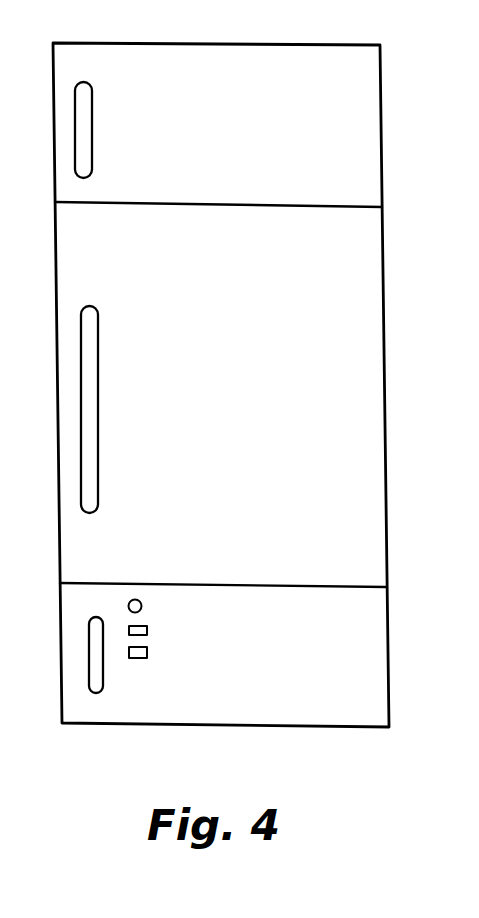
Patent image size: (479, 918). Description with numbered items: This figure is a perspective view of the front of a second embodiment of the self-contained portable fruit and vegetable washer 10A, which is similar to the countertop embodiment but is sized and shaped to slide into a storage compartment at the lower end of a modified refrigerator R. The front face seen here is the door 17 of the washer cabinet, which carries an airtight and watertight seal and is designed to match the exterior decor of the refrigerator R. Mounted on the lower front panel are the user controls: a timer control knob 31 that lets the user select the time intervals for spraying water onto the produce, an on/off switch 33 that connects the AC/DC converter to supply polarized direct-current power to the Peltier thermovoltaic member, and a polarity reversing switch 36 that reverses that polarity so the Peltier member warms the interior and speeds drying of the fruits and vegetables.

The refrigerator R is at (393, 338).
The self-contained portable fruit and vegetable washer 10A is at (372, 624).
The door 17 is at (254, 670).
The timer control knob 31 is at (137, 599).
The on/off switch 33 is at (148, 631).
The polarity reversing switch 36 is at (147, 653).